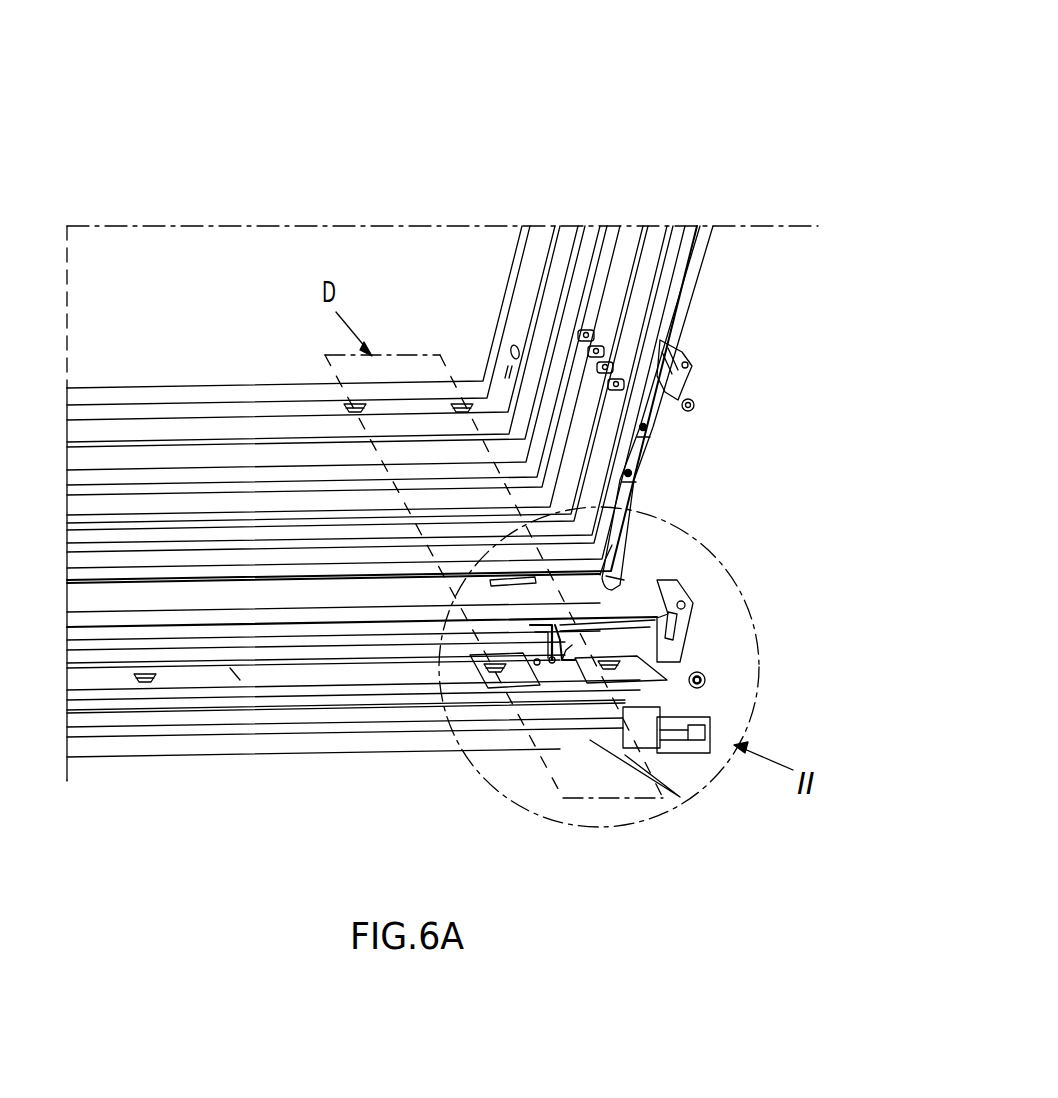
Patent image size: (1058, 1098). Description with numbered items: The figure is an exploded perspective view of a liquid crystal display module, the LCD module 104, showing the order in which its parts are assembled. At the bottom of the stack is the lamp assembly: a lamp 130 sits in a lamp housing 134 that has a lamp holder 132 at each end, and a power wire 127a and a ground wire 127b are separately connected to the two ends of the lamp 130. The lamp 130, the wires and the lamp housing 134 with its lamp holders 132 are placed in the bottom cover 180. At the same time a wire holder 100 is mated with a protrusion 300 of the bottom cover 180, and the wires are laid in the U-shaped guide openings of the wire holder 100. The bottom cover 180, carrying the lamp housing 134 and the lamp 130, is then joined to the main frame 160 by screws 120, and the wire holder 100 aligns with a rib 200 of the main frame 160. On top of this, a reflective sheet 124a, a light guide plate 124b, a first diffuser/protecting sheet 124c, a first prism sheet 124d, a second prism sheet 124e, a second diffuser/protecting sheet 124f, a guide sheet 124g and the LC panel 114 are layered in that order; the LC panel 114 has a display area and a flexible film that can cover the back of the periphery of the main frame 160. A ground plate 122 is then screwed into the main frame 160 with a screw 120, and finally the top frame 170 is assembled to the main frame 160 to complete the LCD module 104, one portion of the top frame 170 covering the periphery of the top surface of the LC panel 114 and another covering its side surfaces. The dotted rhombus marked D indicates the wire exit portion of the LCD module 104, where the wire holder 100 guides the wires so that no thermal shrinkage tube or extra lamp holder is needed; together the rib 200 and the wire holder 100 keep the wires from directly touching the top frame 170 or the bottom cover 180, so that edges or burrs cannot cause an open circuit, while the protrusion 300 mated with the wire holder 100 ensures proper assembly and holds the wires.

The LCD module 104 is at (824, 127).
The top frame 170 is at (527, 240).
The LC panel 114 is at (560, 258).
The guide sheet 124g is at (596, 250).
The second diffuser/protecting sheet 124f is at (598, 252).
The second prism sheet 124e is at (605, 270).
The first prism sheet 124d is at (606, 297).
The first diffuser/protecting sheet 124c is at (612, 320).
The light guide plate 124b is at (588, 474).
The reflective sheet 124a is at (598, 496).
The ground plate 122 is at (690, 363).
The screw 120 is at (698, 404).
The main frame 160 is at (628, 545).
The lamp 130 is at (566, 645).
The power wire 127a is at (552, 650).
The bottom cover 180 is at (690, 630).
The lamp holder 132 is at (708, 735).
The lamp housing 134 is at (686, 797).
The rib 200 is at (498, 590).
The ground wire 127b is at (500, 665).
The wire holder 100 is at (530, 685).
The protrusion 300 is at (560, 660).